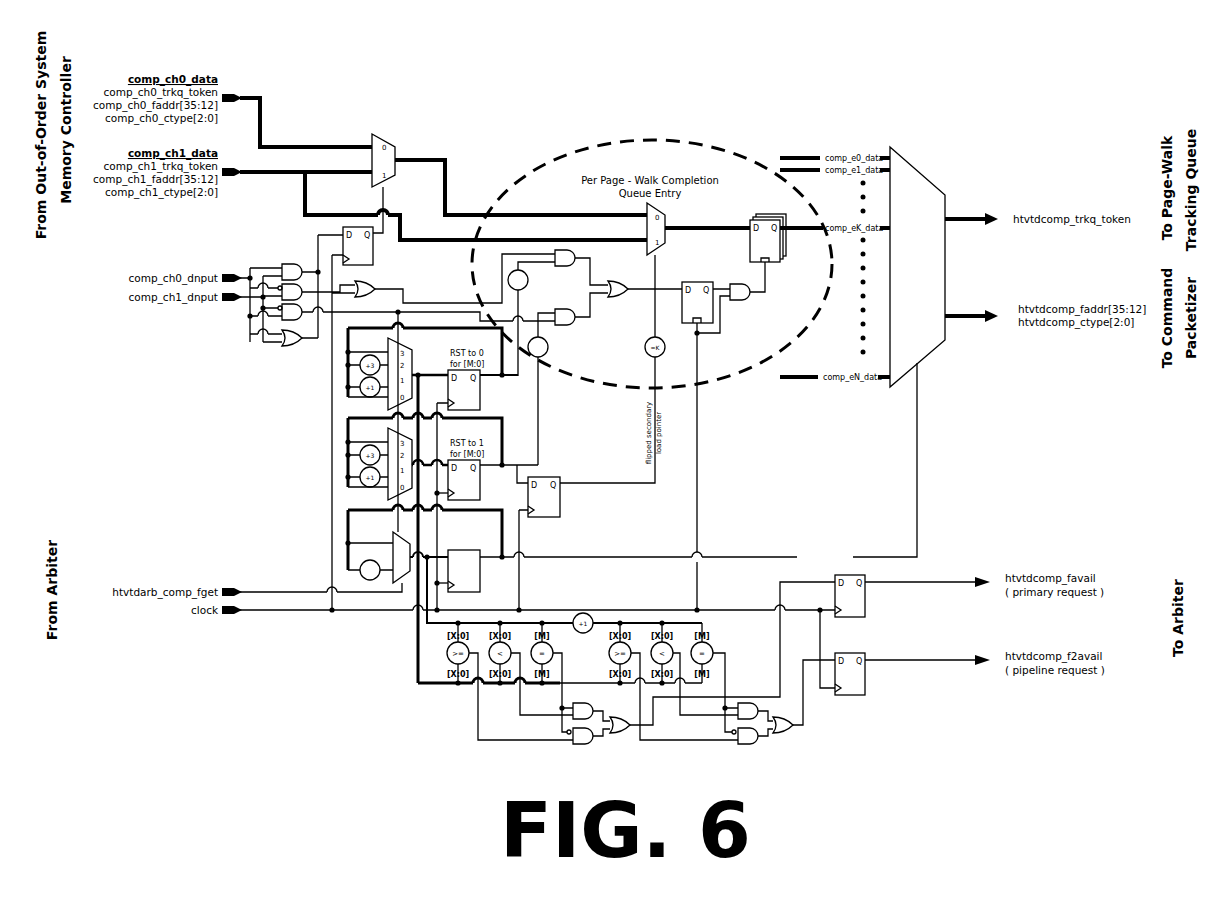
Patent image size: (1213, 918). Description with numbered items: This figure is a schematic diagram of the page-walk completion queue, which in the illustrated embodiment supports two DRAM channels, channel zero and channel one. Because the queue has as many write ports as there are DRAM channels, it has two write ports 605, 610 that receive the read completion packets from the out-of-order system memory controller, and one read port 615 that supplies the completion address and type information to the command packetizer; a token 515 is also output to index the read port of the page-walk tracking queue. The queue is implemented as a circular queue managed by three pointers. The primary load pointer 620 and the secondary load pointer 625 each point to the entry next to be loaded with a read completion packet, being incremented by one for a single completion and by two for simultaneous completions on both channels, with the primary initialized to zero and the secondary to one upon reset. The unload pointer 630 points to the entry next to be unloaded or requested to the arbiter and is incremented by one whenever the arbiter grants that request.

The write port 605 is at (239, 90).
The write port 610 is at (249, 187).
The token 515 is at (979, 190).
The read port 615 is at (986, 338).
The primary load pointer 620 is at (548, 338).
The secondary load pointer 625 is at (554, 433).
The unload pointer 630 is at (816, 545).